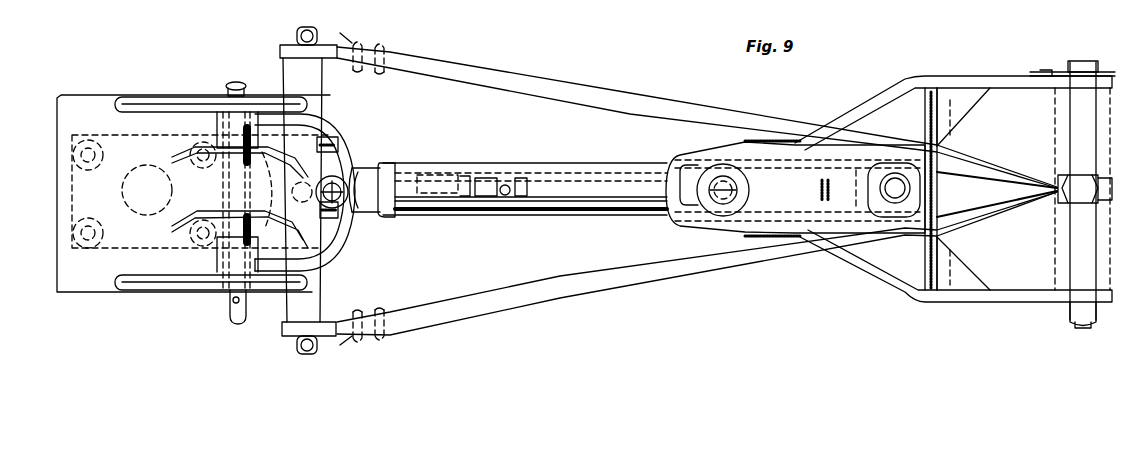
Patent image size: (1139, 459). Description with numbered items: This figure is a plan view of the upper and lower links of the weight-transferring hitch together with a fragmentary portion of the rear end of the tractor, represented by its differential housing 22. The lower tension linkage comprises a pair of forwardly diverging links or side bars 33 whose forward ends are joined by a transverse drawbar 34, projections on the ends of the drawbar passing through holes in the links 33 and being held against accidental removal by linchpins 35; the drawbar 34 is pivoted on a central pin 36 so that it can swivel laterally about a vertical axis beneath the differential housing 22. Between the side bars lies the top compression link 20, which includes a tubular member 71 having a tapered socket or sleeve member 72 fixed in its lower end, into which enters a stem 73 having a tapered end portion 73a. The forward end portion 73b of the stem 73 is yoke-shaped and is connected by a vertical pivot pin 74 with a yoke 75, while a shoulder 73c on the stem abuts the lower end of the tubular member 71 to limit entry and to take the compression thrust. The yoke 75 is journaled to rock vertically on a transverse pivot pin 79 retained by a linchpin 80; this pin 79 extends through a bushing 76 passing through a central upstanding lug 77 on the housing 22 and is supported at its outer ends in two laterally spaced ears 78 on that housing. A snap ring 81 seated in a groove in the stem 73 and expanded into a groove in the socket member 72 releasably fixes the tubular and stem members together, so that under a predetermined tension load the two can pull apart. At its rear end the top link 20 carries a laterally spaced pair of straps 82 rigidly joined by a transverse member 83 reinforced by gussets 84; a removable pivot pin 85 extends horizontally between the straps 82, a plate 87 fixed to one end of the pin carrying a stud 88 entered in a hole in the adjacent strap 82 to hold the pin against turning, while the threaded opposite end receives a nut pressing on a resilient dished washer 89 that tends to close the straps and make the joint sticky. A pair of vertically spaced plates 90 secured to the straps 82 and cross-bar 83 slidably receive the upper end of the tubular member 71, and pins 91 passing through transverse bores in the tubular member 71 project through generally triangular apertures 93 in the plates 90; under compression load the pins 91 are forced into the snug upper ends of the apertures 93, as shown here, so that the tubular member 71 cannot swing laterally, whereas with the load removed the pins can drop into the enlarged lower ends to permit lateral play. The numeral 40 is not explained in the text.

The top compression link 20 is at (555, 228).
The differential housing 22 is at (100, 292).
The links or side bars 33 is at (613, 92).
The transverse drawbar 34 is at (322, 300).
The linchpins 35 is at (317, 38).
The central pivot pin 36 is at (340, 118).
The hitch end 40 is at (1092, 205).
The tubular member 71 is at (592, 163).
The tapered socket or sleeve member 72 is at (493, 180).
The stem 73 is at (403, 180).
The tapered end portion 73a is at (460, 180).
The yoke-shaped forward end portion 73b is at (345, 150).
The shoulder 73c is at (393, 157).
The vertical pivot pin 74 is at (345, 218).
The yoke 75 is at (345, 262).
The bushing 76 is at (215, 240).
The central upstanding lug 77 is at (218, 183).
The ears 78 is at (190, 100).
The transverse pivot pin 79 is at (238, 84).
The linchpin 80 is at (238, 324).
The snap ring 81 is at (533, 173).
The straps 82 is at (1005, 83).
The transverse member 83 is at (927, 257).
The gussets 84 is at (962, 117).
The removable pivot pin 85 is at (1085, 62).
The plate 87 is at (1057, 75).
The stud 88 is at (1037, 82).
The resilient dished washer 89 is at (1065, 308).
The plates 90 is at (700, 226).
The pins 91 is at (742, 186).
The apertures 93 is at (690, 170).